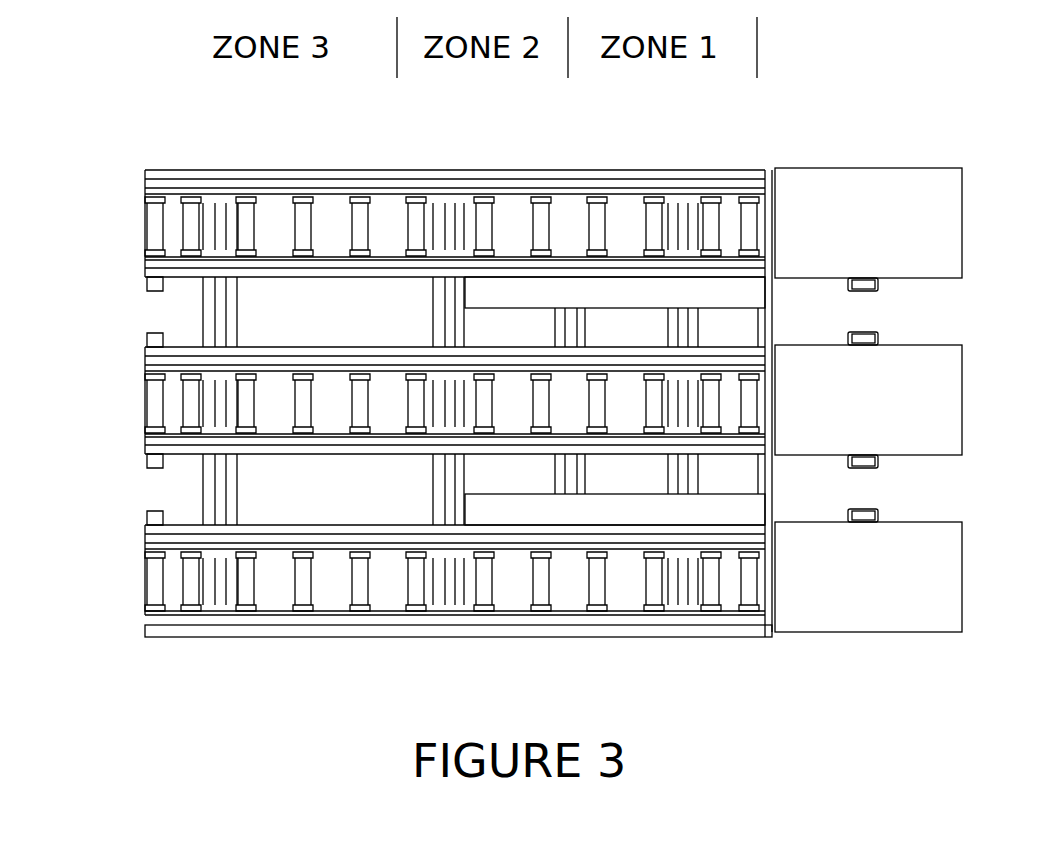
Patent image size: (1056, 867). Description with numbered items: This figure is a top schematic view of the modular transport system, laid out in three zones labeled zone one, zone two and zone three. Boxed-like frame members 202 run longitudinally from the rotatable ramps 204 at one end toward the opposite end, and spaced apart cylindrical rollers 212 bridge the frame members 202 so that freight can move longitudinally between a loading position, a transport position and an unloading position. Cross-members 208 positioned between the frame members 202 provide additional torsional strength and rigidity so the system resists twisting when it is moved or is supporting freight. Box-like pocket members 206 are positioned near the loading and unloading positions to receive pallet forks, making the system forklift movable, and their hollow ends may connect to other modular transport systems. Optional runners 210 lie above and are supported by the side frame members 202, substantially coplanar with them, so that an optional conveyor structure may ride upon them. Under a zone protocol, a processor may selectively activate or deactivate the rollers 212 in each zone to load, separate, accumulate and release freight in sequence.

The boxed-like frame member 202 is at (150, 189).
The rotatable ramp 204 is at (952, 168).
The box-like pocket member 206 is at (612, 282).
The cross-member 208 is at (255, 292).
The optional runner 210 is at (412, 170).
The cylindrical roller 212 is at (598, 197).